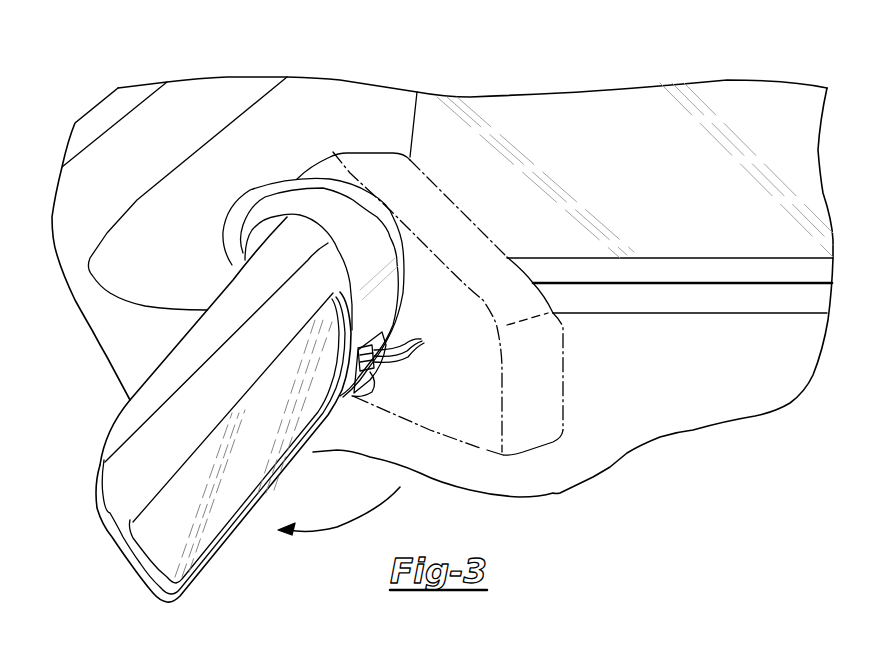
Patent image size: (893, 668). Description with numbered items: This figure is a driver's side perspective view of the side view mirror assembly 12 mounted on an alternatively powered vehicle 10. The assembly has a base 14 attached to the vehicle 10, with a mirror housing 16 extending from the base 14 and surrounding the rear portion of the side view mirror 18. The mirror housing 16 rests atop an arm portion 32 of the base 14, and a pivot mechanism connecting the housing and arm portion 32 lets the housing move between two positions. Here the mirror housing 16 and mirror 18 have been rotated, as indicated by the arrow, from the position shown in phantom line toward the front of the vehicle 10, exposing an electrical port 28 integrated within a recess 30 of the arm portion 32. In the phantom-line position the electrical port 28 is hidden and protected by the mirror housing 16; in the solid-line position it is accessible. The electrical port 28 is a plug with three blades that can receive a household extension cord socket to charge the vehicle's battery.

The alternatively powered vehicle 10 is at (610, 467).
The side view mirror assembly 12 is at (577, 173).
The base 14 is at (332, 97).
The mirror housing 16 is at (128, 427).
The side view mirror 18 is at (233, 507).
The electrical port 28 is at (409, 346).
The recess 30 is at (395, 343).
The arm portion 32 is at (377, 375).